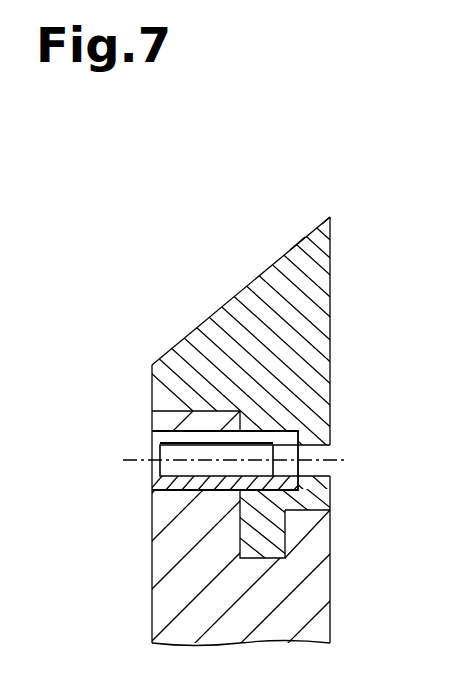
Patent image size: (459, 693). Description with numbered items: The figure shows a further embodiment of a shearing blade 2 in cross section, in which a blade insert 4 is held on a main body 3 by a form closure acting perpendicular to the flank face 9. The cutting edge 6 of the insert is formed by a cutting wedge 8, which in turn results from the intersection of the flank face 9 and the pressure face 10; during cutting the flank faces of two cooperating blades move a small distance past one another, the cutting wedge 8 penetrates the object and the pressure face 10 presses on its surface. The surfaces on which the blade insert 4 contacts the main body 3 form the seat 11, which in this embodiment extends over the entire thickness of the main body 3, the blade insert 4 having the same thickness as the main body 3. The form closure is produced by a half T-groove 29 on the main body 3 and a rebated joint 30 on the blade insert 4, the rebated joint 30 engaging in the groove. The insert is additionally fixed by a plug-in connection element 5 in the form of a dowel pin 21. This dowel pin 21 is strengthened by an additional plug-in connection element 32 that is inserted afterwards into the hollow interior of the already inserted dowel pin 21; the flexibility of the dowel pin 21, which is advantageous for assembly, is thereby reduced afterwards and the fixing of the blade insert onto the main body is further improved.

The shearing blade 2 is at (120, 207).
The main body 3 is at (160, 612).
The blade insert 4 is at (293, 249).
The plug-in connection element 5 is at (150, 503).
The cutting edge 6 is at (326, 223).
The cutting wedge 8 is at (330, 192).
The flank face 9 is at (331, 254).
The pressure face 10 is at (275, 265).
The seat 11 is at (158, 406).
The dowel pin 21 is at (173, 491).
The half T-groove 29 is at (300, 561).
The rebated joint 30 is at (288, 529).
The additional plug-in connection element 32 is at (155, 449).